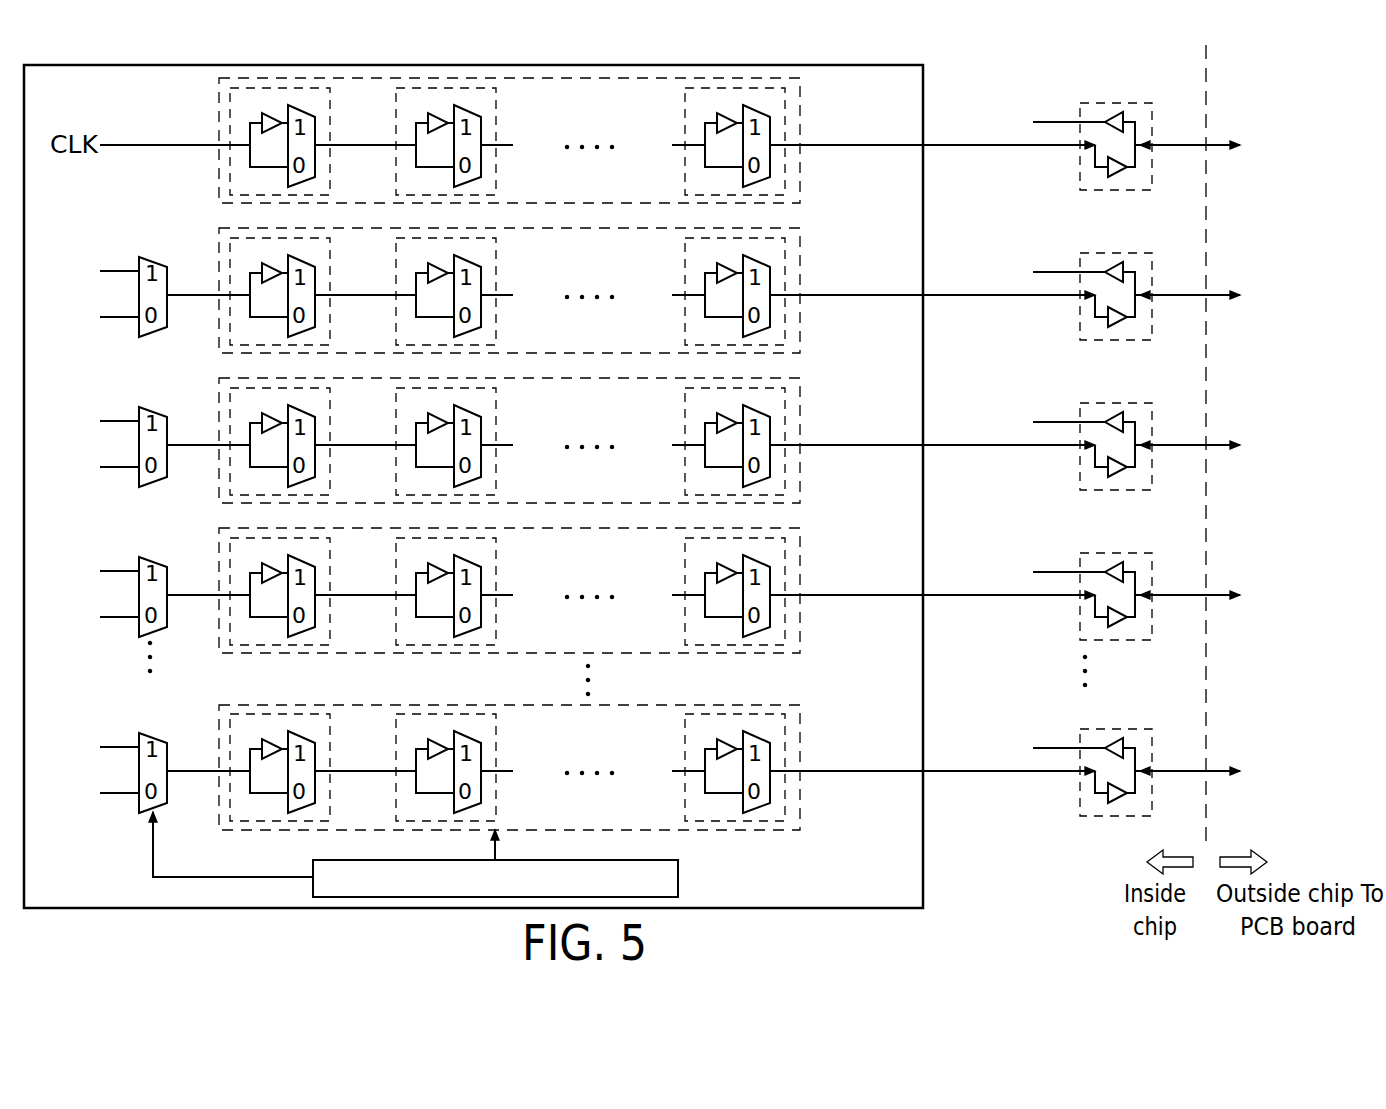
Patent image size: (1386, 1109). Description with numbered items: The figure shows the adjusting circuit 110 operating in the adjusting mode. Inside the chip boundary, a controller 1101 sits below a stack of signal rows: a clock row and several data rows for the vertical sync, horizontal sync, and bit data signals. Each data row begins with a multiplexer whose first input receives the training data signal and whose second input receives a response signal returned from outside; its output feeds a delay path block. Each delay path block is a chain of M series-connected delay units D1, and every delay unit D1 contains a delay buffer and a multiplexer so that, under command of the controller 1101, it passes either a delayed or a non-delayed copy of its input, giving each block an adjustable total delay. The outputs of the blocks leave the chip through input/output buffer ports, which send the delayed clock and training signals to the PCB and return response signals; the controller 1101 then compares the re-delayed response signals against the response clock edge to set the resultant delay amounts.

The adjusting circuit 110 is at (923, 98).
The controller 1101 is at (678, 877).
The delay unit D1 is at (330, 128).